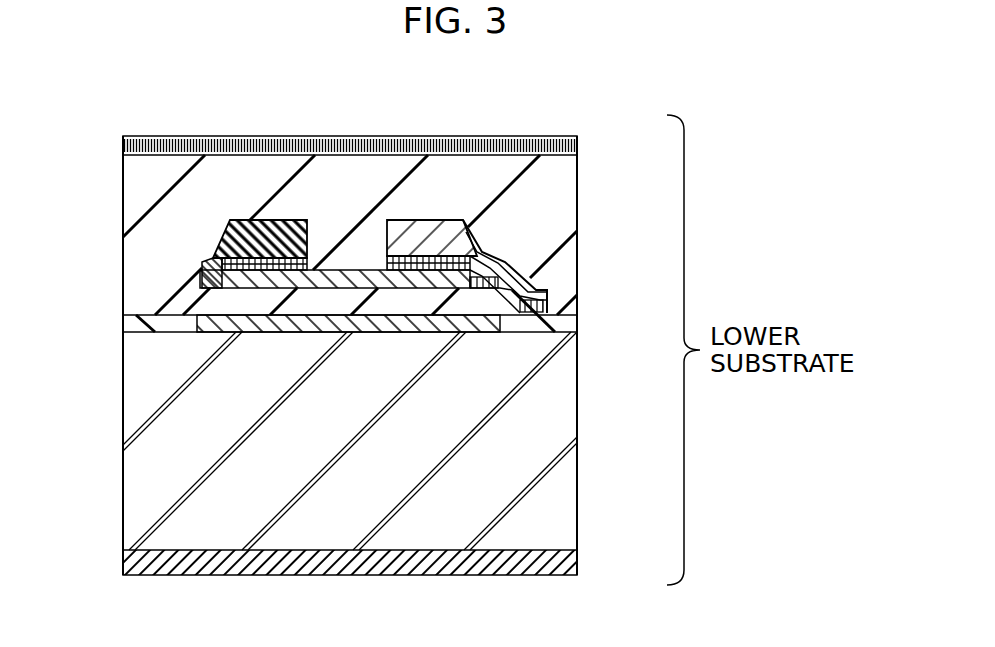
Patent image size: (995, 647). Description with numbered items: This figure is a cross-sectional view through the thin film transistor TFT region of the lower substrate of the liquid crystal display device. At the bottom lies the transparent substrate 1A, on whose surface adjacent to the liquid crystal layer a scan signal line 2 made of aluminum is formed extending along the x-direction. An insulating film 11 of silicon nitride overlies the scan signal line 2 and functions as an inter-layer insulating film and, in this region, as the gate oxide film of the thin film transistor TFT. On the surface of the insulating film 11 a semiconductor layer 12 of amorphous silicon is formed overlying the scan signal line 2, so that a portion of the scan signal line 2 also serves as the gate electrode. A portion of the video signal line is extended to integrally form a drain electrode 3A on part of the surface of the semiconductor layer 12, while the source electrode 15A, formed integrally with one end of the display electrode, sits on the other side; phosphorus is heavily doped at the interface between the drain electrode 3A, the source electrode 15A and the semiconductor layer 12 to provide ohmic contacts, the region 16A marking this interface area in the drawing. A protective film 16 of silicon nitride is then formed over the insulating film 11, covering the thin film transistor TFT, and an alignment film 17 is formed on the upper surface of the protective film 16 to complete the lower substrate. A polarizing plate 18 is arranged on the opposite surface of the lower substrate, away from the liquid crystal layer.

The transparent substrate 1A is at (568, 470).
The scan signal line 2 is at (198, 321).
The drain electrode 3A is at (245, 220).
The insulating film 11 is at (568, 323).
The semiconductor layer 12 is at (372, 262).
The source electrode 15A is at (465, 230).
The protective film 16 is at (565, 276).
The contact portion 16A is at (212, 254).
The alignment film 17 is at (527, 136).
The polarizing plate 18 is at (580, 557).
The thin film transistor TFT is at (340, 212).